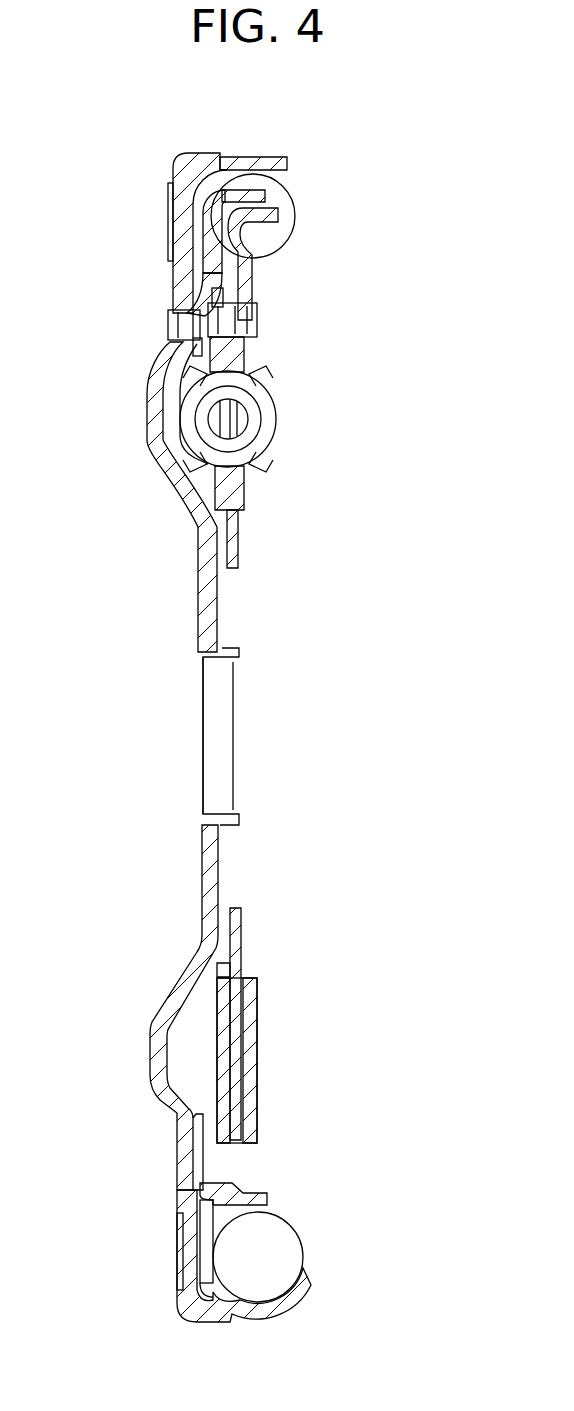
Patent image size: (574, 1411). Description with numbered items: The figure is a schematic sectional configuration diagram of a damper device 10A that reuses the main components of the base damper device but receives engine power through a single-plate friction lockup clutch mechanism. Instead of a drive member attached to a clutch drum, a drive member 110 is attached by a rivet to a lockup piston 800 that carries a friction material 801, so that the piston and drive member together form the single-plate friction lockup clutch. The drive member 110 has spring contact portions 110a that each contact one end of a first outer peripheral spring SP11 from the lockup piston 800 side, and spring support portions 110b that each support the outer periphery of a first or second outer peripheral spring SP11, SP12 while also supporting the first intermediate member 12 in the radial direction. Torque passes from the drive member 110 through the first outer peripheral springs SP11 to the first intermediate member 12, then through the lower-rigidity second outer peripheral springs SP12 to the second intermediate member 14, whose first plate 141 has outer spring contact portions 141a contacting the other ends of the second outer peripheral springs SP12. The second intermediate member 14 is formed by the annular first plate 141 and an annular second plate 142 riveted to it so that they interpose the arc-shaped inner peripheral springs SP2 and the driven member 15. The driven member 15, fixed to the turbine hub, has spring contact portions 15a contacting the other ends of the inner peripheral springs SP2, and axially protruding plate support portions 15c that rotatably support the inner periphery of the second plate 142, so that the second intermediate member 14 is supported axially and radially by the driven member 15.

The damper device 10A is at (170, 152).
The first intermediate member 12 is at (248, 154).
The friction material 801 is at (167, 222).
The spring contact portions 110a is at (267, 195).
The first outer peripheral springs SP11 is at (294, 205).
The spring contact portions 141a is at (285, 215).
The drive member 110 is at (225, 270).
The lockup piston 800 is at (146, 372).
The spring contact portions 15a is at (232, 418).
The inner peripheral springs SP2 is at (273, 418).
The driven member 15 is at (245, 970).
The plate support portions 15c is at (213, 967).
The first plate 141 is at (257, 1034).
The second plate 142 is at (257, 1078).
The second intermediate member 14 is at (333, 1060).
The spring support portions 110b is at (268, 1197).
The second outer peripheral springs SP12 is at (303, 1252).